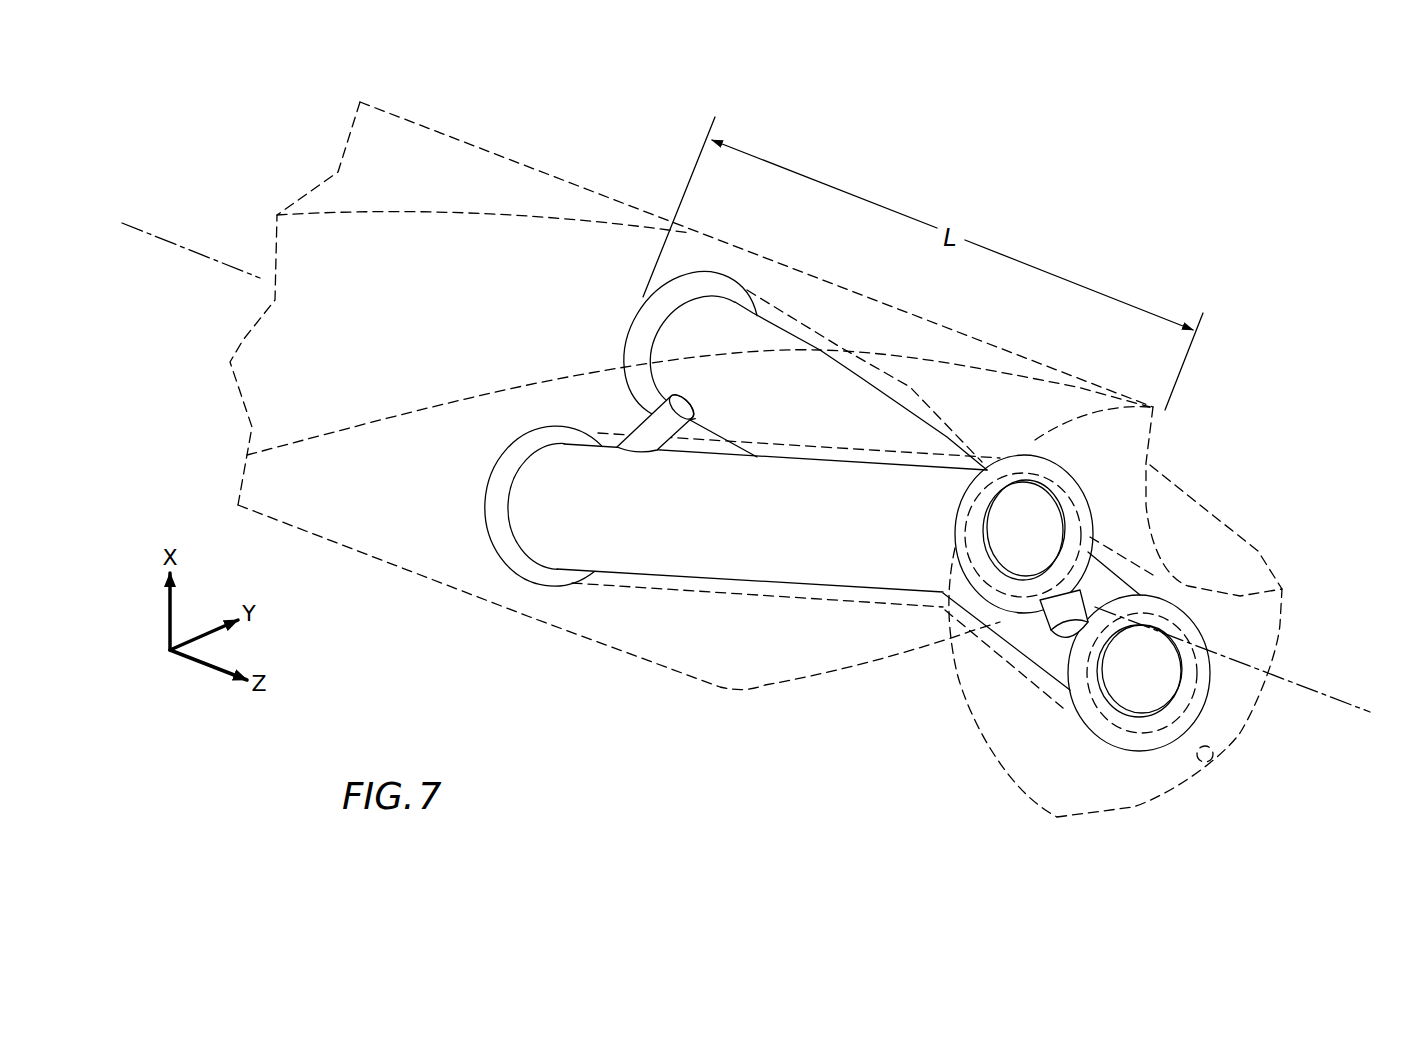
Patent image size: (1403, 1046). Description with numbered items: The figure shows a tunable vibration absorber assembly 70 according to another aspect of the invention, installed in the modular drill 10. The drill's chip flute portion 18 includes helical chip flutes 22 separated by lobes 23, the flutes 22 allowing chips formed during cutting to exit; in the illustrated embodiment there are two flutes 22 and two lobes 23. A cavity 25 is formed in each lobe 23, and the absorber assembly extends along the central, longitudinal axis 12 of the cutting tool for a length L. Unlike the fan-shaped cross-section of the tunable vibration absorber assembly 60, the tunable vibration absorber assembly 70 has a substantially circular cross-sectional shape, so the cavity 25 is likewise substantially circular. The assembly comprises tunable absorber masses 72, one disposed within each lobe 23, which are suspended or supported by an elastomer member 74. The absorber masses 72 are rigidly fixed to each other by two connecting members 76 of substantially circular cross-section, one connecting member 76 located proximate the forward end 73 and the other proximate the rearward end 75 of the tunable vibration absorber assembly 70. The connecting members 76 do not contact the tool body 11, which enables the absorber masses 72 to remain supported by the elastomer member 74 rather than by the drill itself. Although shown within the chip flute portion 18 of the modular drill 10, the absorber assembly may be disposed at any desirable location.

The modular drill 10 is at (846, 495).
The tool body 11 is at (525, 140).
The central, longitudinal axis 12 is at (196, 253).
The chip flute portion 18 is at (556, 158).
The helical chip flute 22 is at (1186, 528).
The lobe 23 is at (967, 388).
The cavity 25 is at (960, 562).
The tunable vibration absorber assembly 60 is at (592, 645).
The tunable vibration absorber assembly 70 is at (690, 580).
The absorber mass 72 is at (1027, 527).
The forward end 73 is at (1225, 769).
The elastomer member 74 is at (1163, 722).
The rearward end 75 is at (485, 483).
The connecting member 76 is at (647, 427).